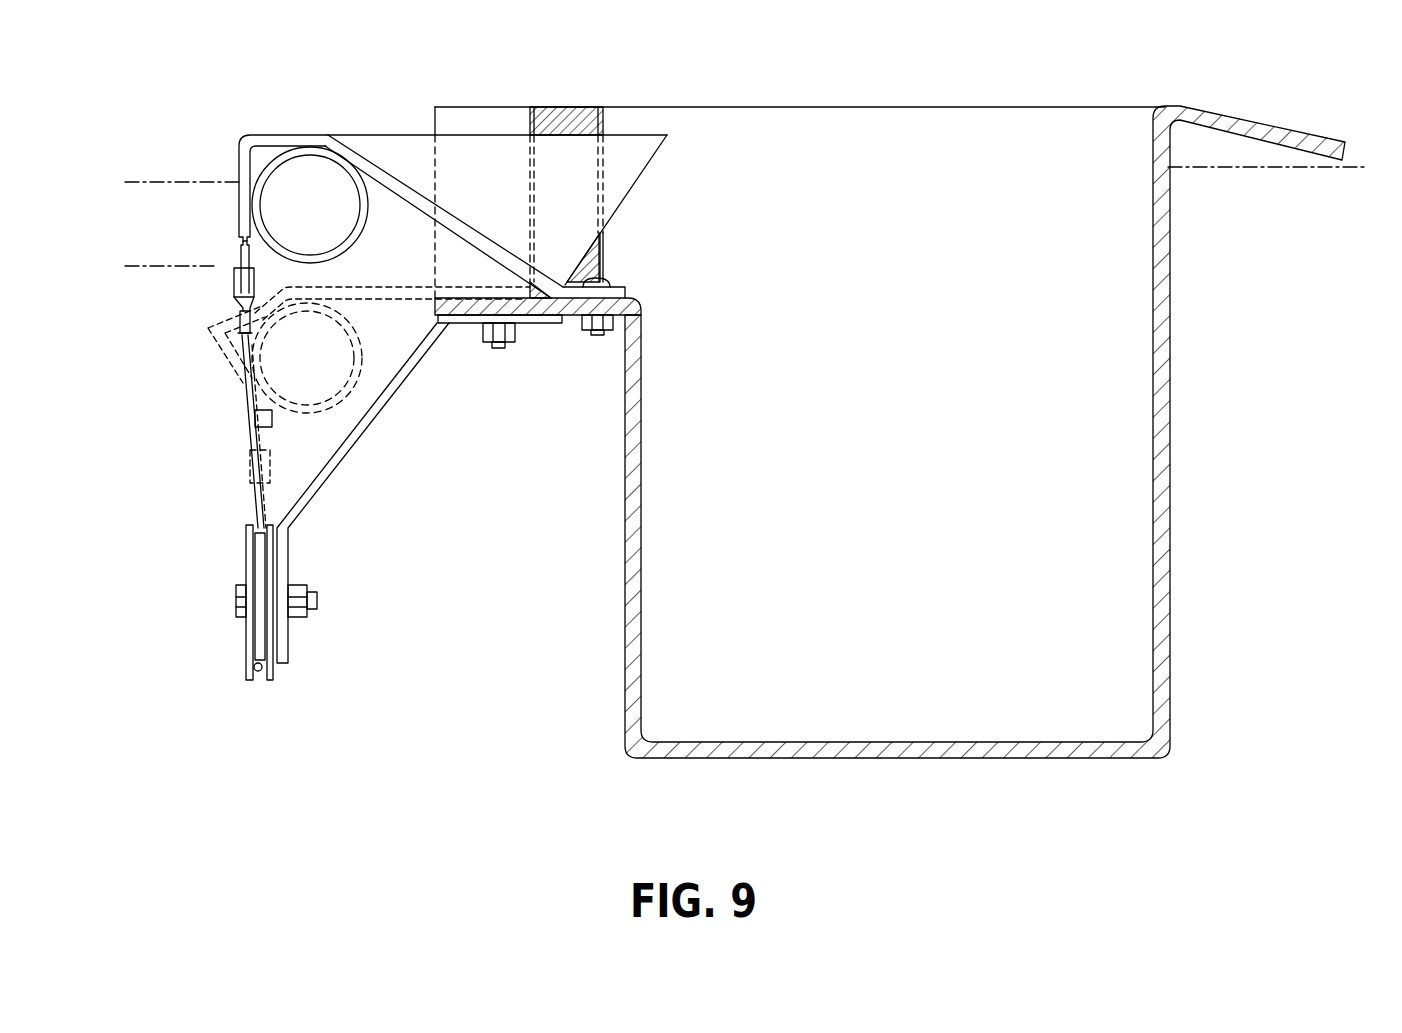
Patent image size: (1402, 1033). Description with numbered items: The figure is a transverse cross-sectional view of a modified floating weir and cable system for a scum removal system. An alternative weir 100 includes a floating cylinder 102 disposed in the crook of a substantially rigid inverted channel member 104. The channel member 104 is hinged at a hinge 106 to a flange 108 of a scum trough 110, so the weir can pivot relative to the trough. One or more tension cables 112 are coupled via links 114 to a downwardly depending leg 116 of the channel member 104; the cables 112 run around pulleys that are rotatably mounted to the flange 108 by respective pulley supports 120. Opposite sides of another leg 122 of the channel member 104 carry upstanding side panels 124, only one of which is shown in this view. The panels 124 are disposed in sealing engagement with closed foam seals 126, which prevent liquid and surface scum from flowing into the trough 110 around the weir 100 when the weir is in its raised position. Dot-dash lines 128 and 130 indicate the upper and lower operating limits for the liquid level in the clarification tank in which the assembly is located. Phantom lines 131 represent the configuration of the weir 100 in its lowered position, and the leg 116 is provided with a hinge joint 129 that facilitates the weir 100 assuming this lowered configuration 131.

The weir 100 is at (344, 285).
The floating cylinder 102 is at (309, 155).
The inverted channel member 104 is at (343, 129).
The hinge 106 is at (563, 302).
The flange 108 is at (458, 313).
The scum trough 110 is at (1170, 393).
The tension cable 112 is at (247, 390).
The link 114 is at (233, 276).
The downwardly depending leg 116 is at (238, 202).
The pulley support 120 is at (308, 489).
The leg 122 is at (433, 215).
The upstanding side panel 124 is at (474, 166).
The closed foam seal 126 is at (572, 108).
The dot-dash line 128 is at (143, 182).
The hinge joint 129 is at (240, 240).
The dot-dash line 130 is at (143, 267).
The phantom lines 131 is at (348, 398).